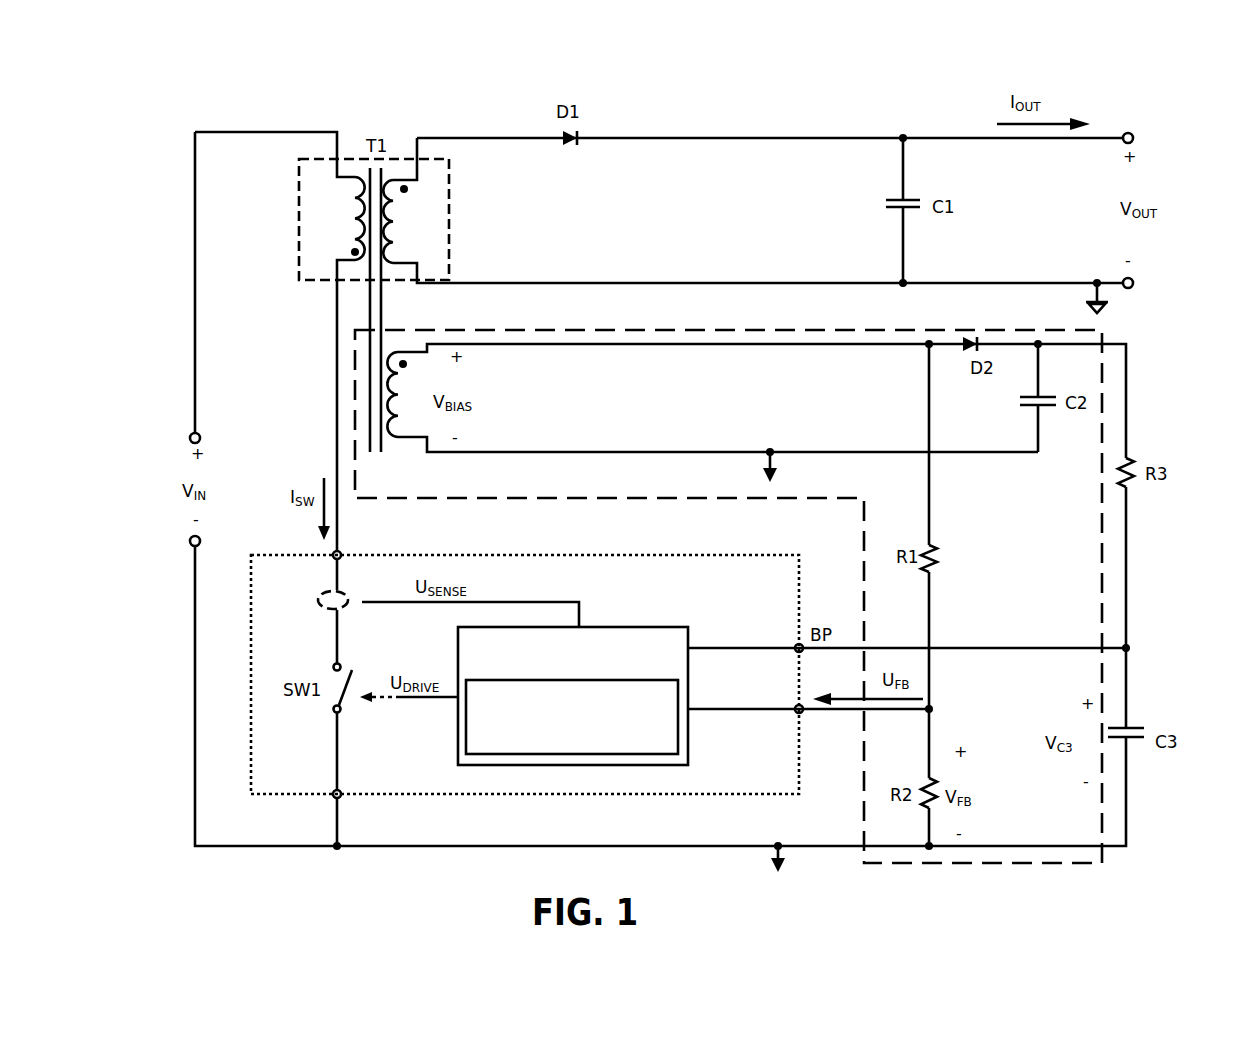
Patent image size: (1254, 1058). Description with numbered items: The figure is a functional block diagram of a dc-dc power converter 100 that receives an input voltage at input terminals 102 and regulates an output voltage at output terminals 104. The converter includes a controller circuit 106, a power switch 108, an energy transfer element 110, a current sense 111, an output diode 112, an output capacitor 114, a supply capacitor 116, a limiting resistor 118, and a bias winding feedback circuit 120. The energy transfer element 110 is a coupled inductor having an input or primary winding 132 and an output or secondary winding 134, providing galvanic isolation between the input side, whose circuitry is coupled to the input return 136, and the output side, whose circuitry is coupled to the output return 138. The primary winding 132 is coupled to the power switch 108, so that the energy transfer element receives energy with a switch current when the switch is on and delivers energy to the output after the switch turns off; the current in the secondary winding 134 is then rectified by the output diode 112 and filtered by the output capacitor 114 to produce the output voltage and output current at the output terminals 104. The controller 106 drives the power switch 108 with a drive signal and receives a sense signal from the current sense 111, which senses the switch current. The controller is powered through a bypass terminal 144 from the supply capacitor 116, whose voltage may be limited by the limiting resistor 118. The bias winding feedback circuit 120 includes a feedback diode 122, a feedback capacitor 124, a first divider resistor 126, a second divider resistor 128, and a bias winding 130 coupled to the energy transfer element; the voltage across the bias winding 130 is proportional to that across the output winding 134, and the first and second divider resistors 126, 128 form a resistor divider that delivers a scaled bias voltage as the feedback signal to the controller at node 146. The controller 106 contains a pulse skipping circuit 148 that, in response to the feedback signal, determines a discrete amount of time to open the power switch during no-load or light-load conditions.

The power converter 100 is at (745, 132).
The input terminals 102 is at (188, 433).
The output terminals 104 is at (1140, 142).
The controller circuit 106 is at (525, 674).
The power switch SW1 108 is at (326, 708).
The energy transfer element T1 110 is at (458, 188).
The current sense 111 is at (352, 616).
The output diode D1 112 is at (563, 150).
The output capacitor C1 114 is at (888, 198).
The supply capacitor C3 116 is at (1148, 726).
The resistor R3 118 is at (1135, 470).
The bias winding feedback circuit 120 is at (750, 320).
The diode D2 122 is at (964, 350).
The capacitor C2 124 is at (1047, 410).
The resistor R1 126 is at (938, 560).
The resistor R2 128 is at (904, 808).
The bias winding 130 is at (404, 402).
The input winding 132 is at (345, 224).
The output winding 134 is at (394, 231).
The input return 136 is at (783, 456).
The output return 138 is at (1092, 293).
The bypass terminal BP 144 is at (797, 646).
The node 146 is at (887, 715).
The pulse skipping circuit 148 is at (572, 717).